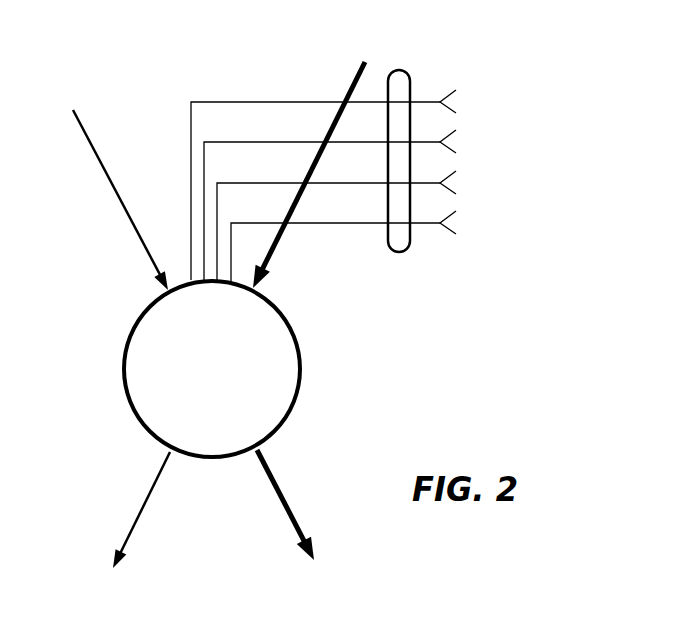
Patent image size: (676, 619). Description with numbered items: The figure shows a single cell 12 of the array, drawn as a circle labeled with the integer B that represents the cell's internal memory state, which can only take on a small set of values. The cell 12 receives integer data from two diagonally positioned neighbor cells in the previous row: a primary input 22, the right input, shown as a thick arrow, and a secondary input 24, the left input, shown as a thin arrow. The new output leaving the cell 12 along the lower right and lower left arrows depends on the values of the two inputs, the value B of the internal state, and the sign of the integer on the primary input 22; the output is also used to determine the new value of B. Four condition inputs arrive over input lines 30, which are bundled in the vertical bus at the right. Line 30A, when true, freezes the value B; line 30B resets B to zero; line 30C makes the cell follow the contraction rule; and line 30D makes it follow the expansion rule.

The cell 12 is at (302, 365).
The primary input 22 is at (281, 240).
The secondary input 24 is at (112, 177).
The input lines 30 is at (396, 68).
The line 30A is at (270, 100).
The line 30B is at (265, 141).
The line 30C is at (272, 182).
The line 30D is at (272, 222).